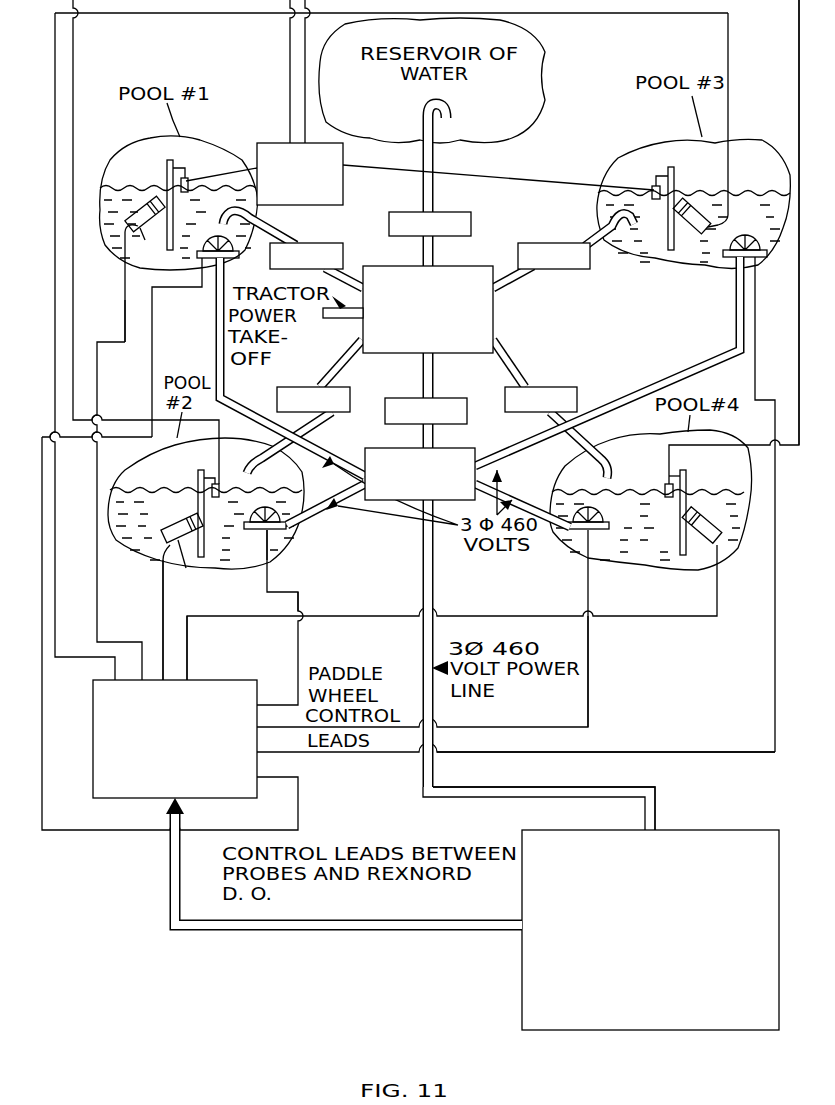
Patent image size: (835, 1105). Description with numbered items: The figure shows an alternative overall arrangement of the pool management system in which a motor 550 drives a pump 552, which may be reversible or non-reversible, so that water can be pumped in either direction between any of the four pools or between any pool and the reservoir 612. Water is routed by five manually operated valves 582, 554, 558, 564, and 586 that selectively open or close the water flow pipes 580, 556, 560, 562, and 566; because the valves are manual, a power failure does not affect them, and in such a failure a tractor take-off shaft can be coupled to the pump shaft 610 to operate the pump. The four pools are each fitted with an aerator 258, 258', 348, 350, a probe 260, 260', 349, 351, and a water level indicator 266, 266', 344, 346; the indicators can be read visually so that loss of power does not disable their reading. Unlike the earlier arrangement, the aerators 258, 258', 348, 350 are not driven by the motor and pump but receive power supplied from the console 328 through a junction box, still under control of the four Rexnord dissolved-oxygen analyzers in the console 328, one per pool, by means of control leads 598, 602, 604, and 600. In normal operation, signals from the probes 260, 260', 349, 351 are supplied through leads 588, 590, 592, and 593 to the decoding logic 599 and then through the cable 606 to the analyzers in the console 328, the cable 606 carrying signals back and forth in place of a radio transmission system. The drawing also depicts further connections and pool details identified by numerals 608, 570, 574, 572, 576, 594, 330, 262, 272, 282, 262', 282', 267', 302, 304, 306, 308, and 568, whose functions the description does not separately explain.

The reservoir 612 is at (542, 57).
The water flow pipe 580 is at (422, 113).
The valve 582 is at (452, 214).
The pump 552 is at (455, 266).
The motor 550 is at (448, 398).
The junction box 608 is at (458, 449).
The pump shaft 610 is at (340, 318).
The valve 586 is at (253, 170).
The lead 590 is at (500, 174).
The lead 593 is at (799, 45).
The pool #1 262 is at (179, 191).
The probe rod 272 is at (168, 165).
The water level indicator 266 is at (146, 179).
The sensor 282 is at (146, 228).
The aerator 258 is at (208, 235).
The probe 260 is at (103, 296).
The water flow pipe 556 is at (279, 230).
The valve 554 is at (344, 254).
The pool #3 302 is at (658, 142).
The probe rod 304 is at (668, 172).
The water level indicator 344 is at (655, 197).
The probe 349 is at (697, 205).
The aerator 348 is at (745, 240).
The water flow pipe 562 is at (573, 231).
The valve 564 is at (537, 245).
The water flow pipe 560 is at (348, 378).
The valve 558 is at (329, 412).
The water flow pipe 566 is at (528, 367).
The valve 568 is at (578, 392).
The paddle wheel power lead pool #1 570 is at (216, 352).
The paddle wheel power lead pool #3 574 is at (735, 334).
The paddle wheel power lead pool #2 572 is at (303, 506).
The paddle wheel power lead pool #4 576 is at (518, 486).
The lead 588 is at (97, 392).
The pool #2 262' is at (178, 503).
The water level indicator 266' is at (223, 513).
The probe 260' is at (161, 523).
The aerator 258' is at (271, 499).
The sensor lead 282' is at (195, 564).
The paddle wheel lead 267' is at (303, 545).
The pool #4 306 is at (740, 445).
The probe rod 308 is at (688, 480).
The water level indicator 346 is at (669, 500).
The probe 351 is at (712, 525).
The aerator 350 is at (598, 517).
The decoding logic 599 is at (93, 731).
The lead 592 is at (72, 657).
The control lead 594 is at (188, 637).
The lead 598 is at (298, 808).
The lead 600 is at (299, 645).
The lead 602 is at (646, 752).
The lead 604 is at (589, 680).
The three phase 460 volt power line 330 is at (555, 787).
The console 328 is at (720, 830).
The cable 606 is at (370, 922).